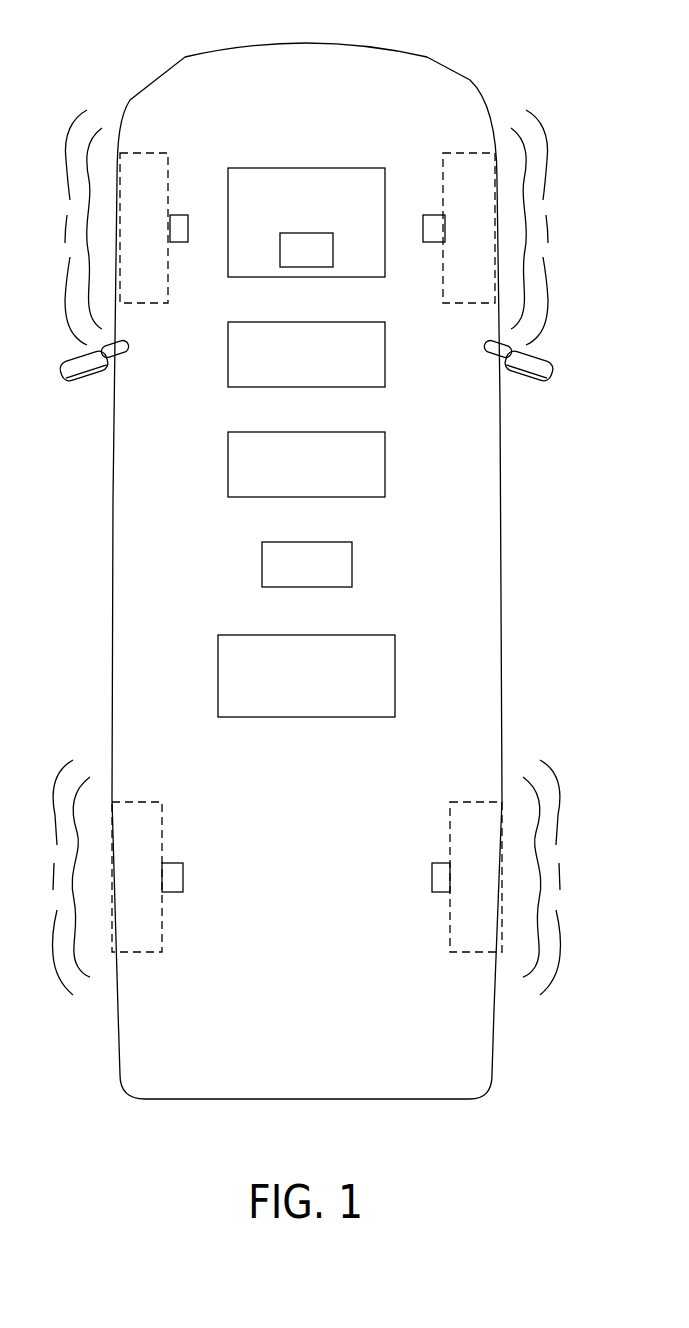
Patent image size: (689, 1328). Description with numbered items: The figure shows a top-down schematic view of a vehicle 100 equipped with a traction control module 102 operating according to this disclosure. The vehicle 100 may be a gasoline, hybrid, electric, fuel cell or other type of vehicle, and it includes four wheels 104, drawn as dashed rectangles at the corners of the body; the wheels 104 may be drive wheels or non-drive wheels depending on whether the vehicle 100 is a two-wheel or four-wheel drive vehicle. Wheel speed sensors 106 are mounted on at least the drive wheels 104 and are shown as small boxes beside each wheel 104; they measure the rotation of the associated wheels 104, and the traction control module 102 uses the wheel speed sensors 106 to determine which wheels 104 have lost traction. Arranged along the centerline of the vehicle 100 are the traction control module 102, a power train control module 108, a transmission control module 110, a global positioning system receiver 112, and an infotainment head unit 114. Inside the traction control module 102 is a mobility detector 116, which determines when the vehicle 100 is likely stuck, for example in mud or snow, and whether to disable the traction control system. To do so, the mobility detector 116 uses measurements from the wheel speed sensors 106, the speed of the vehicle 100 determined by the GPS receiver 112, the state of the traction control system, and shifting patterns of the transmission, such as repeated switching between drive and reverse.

The vehicle 100 is at (453, 77).
The traction control module 102 is at (306, 194).
The wheels 104 is at (143, 153).
The wheel speed sensors 106 is at (179, 215).
The power train control module 108 is at (385, 352).
The transmission control module 110 is at (385, 462).
The global positioning system (GPS) receiver 112 is at (352, 561).
The infotainment head unit 114 is at (395, 674).
The mobility detector 116 is at (324, 261).